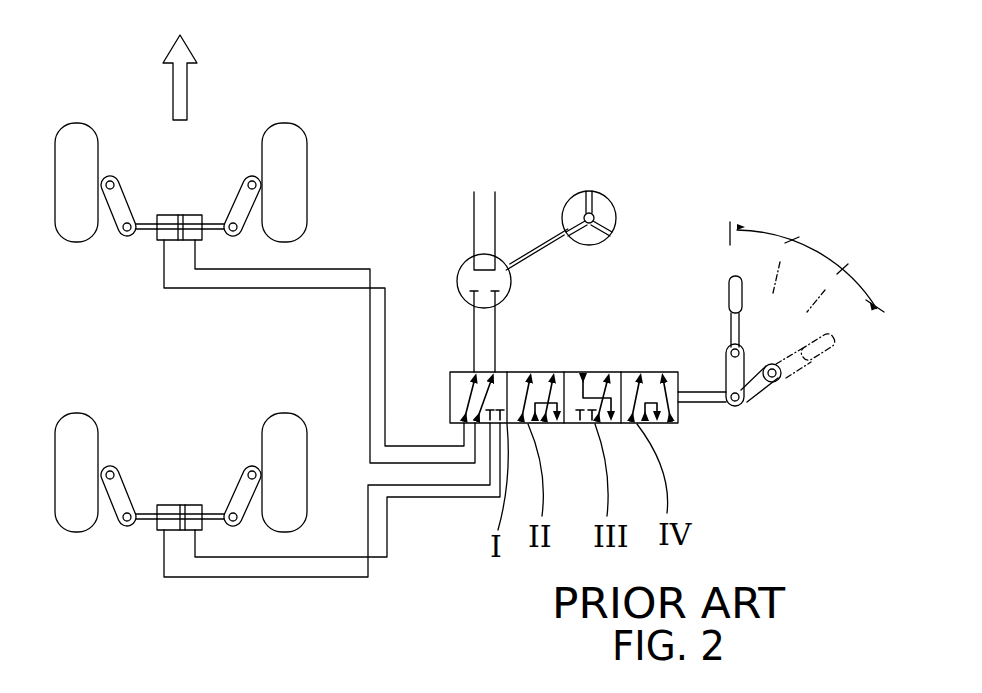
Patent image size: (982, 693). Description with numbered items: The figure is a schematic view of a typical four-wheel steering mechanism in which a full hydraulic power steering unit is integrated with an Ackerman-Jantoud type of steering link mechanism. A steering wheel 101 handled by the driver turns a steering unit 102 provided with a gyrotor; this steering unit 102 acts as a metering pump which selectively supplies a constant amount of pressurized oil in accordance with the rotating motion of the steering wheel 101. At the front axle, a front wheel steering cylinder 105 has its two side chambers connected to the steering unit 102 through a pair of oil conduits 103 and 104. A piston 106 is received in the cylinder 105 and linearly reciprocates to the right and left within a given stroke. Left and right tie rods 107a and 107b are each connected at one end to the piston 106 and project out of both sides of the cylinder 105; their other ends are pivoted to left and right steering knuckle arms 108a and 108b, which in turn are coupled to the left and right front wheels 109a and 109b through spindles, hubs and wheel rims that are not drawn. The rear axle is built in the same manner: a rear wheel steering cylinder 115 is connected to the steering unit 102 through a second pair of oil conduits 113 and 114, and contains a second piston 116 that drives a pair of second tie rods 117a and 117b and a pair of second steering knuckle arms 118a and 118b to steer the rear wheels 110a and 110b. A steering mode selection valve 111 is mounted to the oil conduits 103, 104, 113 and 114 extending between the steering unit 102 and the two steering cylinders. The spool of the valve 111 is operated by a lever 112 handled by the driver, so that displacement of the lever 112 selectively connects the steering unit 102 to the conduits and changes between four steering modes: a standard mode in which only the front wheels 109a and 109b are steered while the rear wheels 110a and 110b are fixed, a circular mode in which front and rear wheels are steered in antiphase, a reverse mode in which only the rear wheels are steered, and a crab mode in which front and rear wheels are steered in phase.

The steering wheel 101 is at (590, 192).
The steering unit 102 is at (468, 258).
The oil conduit 103 is at (330, 269).
The oil conduit 104 is at (297, 288).
The front wheel steering cylinder 105 is at (187, 214).
The piston 106 is at (165, 243).
The left tie rod 107a is at (147, 233).
The right tie rod 107b is at (212, 222).
The left steering knuckle arm 108a is at (110, 176).
The right steering knuckle arm 108b is at (243, 176).
The left front wheel 109a is at (68, 143).
The right front wheel 109b is at (292, 170).
The left rear wheel 110a is at (68, 515).
The right rear wheel 110b is at (290, 527).
The steering mode selection valve 111 is at (680, 424).
The lever 112 is at (729, 292).
The oil conduit 113 is at (368, 498).
The oil conduit 114 is at (423, 497).
The rear wheel steering cylinder 115 is at (164, 505).
The second piston 116 is at (182, 504).
The second tie rod 117a is at (147, 522).
The second tie rod 117b is at (205, 532).
The second steering knuckle arm 118a is at (112, 466).
The second steering knuckle arm 118b is at (245, 466).